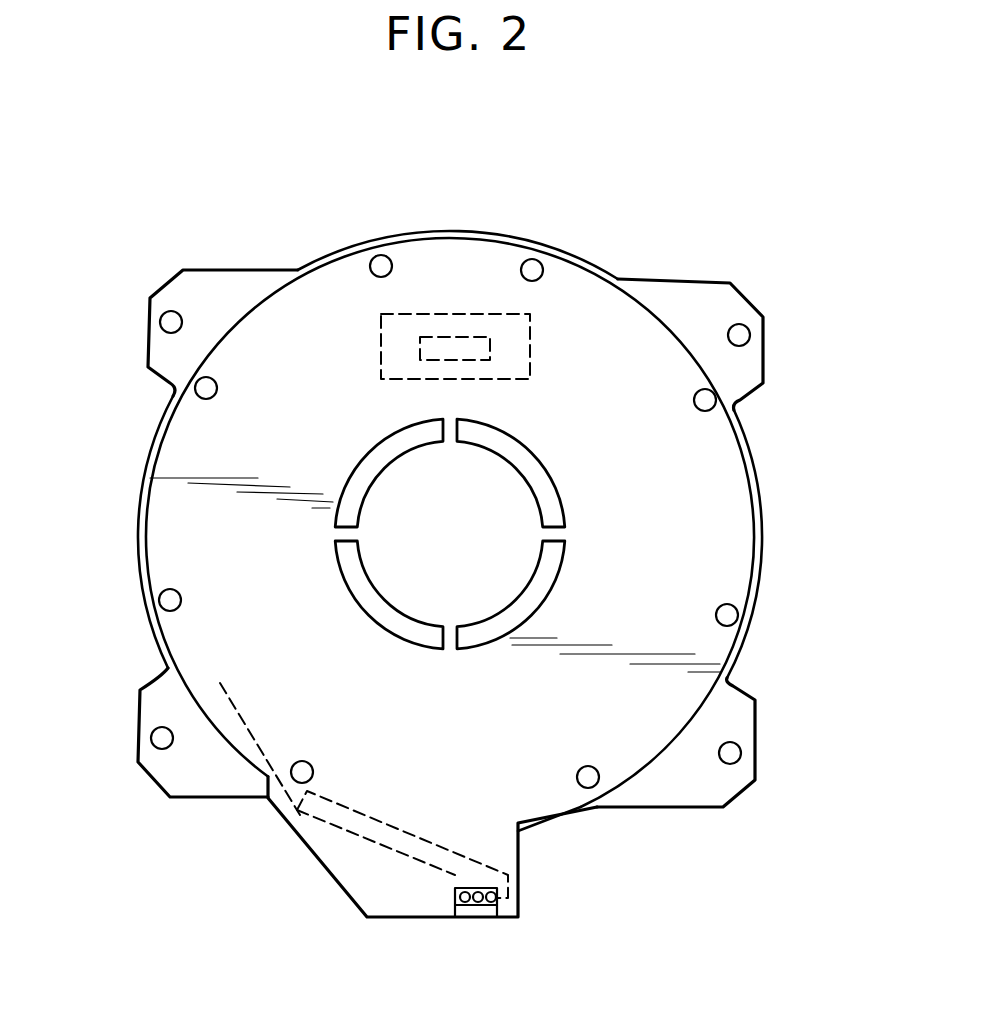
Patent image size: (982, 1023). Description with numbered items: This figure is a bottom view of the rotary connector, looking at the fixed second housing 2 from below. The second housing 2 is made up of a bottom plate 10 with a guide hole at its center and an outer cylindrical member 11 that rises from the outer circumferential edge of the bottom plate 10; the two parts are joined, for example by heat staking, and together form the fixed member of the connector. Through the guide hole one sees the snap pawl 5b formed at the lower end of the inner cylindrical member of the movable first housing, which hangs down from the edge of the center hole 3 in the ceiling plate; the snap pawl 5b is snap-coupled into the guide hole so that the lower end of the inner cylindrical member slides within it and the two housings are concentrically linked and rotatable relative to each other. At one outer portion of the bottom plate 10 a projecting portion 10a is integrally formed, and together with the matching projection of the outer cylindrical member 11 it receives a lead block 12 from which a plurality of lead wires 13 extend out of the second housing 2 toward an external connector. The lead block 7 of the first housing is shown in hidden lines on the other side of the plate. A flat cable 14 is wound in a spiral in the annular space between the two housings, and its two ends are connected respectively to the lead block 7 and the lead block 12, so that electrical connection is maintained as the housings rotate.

The second housing 2 is at (853, 453).
The bottom plate 10 is at (720, 472).
The outer cylindrical member 11 is at (765, 535).
The projecting portion 10a is at (350, 867).
The snap pawl 5b is at (535, 597).
The center hole 3 is at (373, 557).
The lead block 7 is at (467, 337).
The flat cable 14 is at (222, 683).
The lead block 12 is at (412, 857).
The lead wires 13 is at (478, 908).